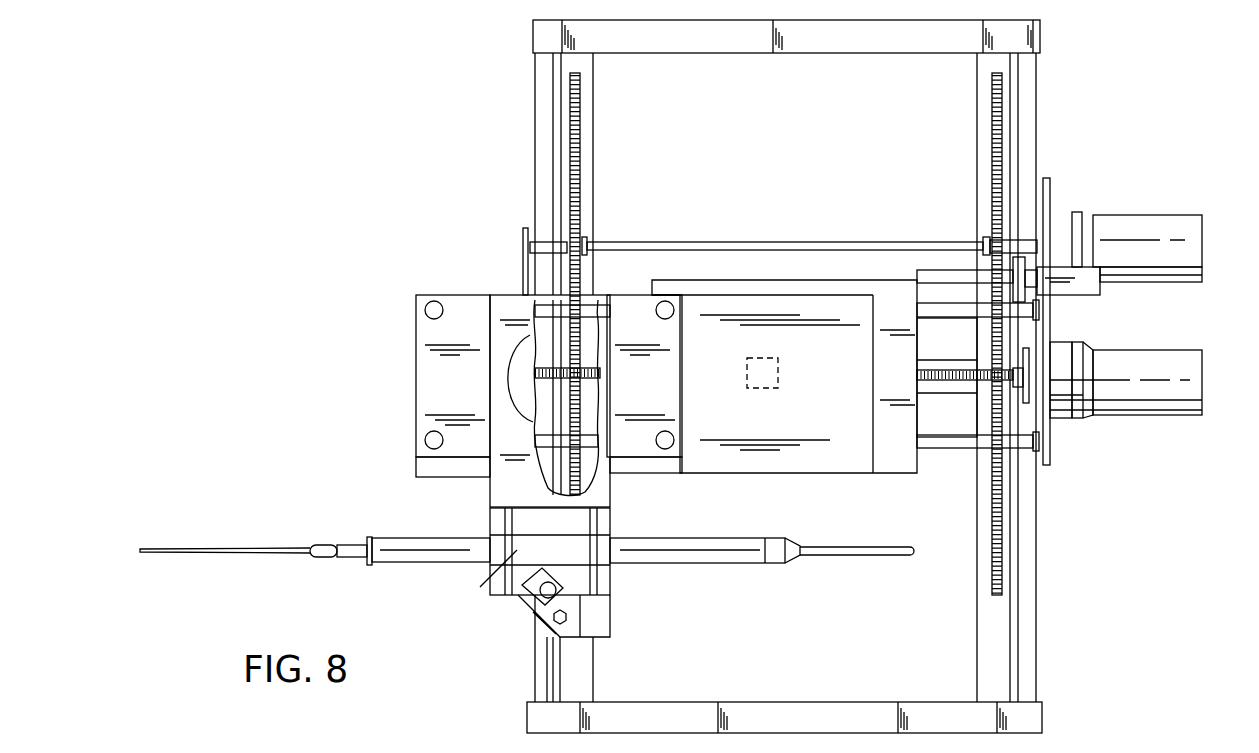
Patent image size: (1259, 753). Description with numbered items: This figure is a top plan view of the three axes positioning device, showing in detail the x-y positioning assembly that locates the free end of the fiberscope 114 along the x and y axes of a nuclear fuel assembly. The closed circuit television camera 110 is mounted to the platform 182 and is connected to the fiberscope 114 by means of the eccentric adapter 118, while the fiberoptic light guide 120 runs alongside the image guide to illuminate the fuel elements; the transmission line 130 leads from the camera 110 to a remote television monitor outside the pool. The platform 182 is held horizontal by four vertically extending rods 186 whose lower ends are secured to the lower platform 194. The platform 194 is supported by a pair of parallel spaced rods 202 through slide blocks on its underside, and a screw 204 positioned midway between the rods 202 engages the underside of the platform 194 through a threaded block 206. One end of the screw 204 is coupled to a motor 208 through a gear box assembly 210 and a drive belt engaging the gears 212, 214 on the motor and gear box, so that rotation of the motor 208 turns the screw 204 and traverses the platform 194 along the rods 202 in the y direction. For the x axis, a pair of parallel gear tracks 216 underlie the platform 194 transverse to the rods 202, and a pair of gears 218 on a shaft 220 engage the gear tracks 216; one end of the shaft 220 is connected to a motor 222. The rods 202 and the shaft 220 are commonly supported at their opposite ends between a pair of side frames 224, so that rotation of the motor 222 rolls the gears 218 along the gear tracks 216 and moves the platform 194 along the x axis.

The closed circuit television camera 110 is at (490, 583).
The fiberscope 114 is at (348, 545).
The eccentric adapter 118 is at (437, 545).
The fiberoptic light guide 120 is at (195, 548).
The transmission line 130 is at (830, 546).
The platform 182 is at (603, 493).
The vertically extending rods 186 is at (430, 310).
The platform 194 is at (805, 300).
The parallel spaced rods 202 is at (960, 307).
The screw 204 is at (930, 382).
The threaded block 206 is at (778, 375).
The motor 208 is at (1125, 358).
The gear box assembly 210 is at (1090, 290).
The gear 212 is at (1018, 372).
The gear 214 is at (1015, 278).
The gear tracks 216 is at (580, 140).
The gears 218 is at (578, 228).
The shaft 220 is at (727, 242).
The motor 222 is at (1192, 258).
The side frames 224 is at (523, 268).